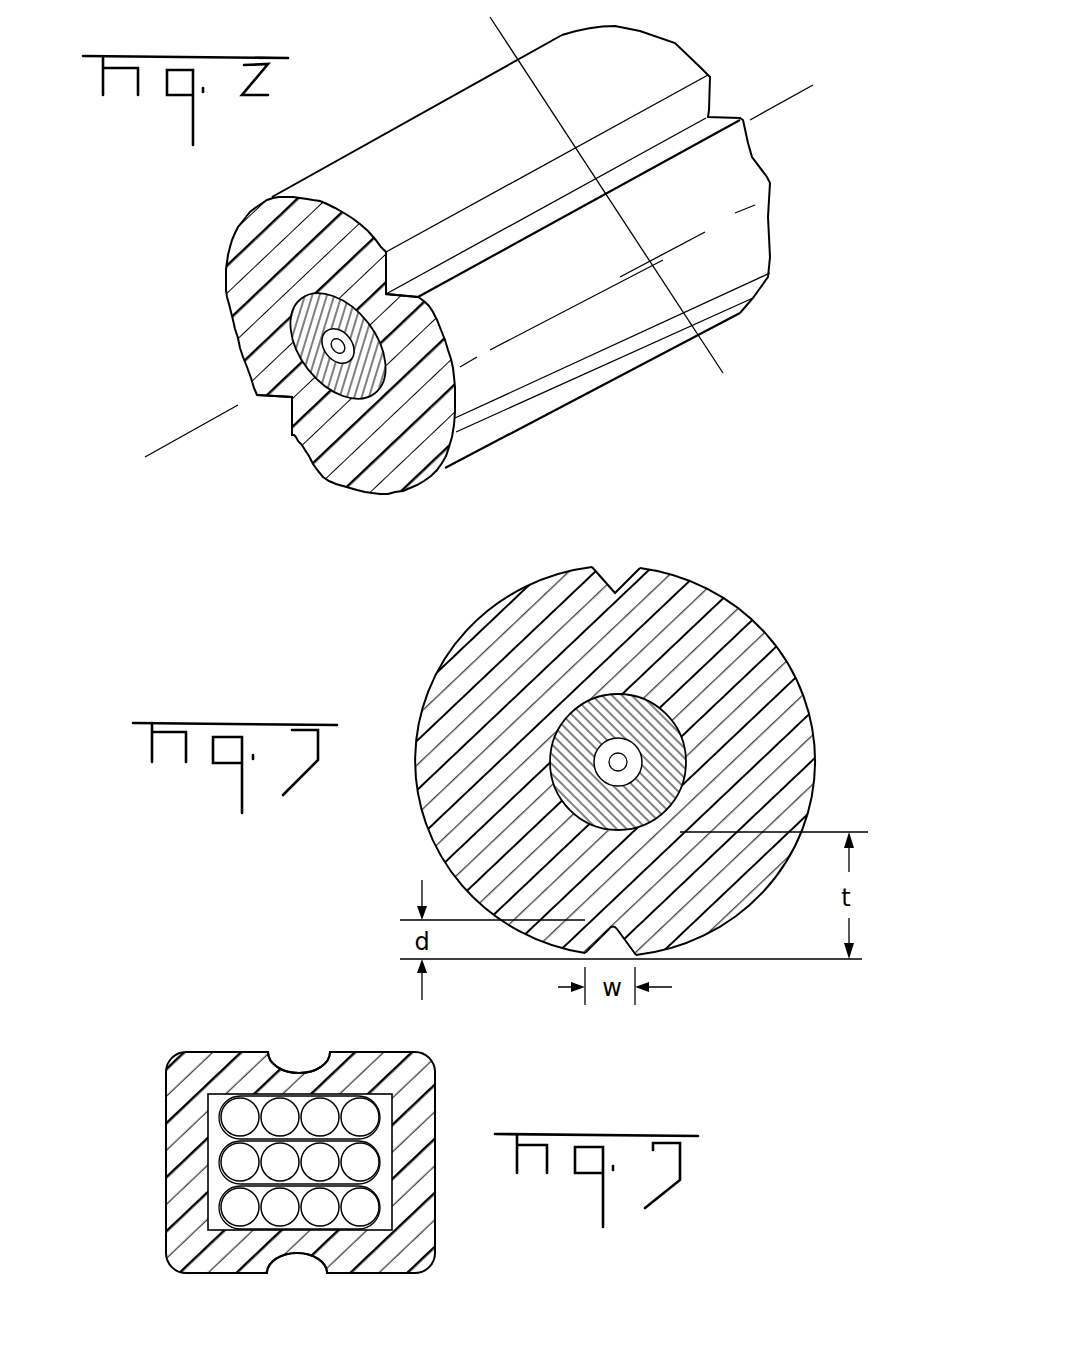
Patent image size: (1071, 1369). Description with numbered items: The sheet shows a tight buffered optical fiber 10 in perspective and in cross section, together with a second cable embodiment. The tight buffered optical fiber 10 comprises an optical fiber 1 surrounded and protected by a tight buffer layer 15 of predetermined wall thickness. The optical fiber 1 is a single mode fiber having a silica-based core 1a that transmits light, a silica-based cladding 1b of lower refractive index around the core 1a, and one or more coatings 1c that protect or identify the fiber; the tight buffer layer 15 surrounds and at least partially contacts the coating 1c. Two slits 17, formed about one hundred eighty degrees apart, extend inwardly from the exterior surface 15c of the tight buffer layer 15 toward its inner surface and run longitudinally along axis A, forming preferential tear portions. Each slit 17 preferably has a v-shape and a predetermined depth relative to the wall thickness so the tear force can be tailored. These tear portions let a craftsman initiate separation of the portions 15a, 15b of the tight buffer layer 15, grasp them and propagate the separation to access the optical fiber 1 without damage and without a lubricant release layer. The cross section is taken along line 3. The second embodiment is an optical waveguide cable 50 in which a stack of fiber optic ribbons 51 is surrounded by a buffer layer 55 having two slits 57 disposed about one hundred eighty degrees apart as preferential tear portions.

In FIG. 2, the optical fiber 1 is at (350, 397).
In FIG. 3, the optical fiber 1 is at (670, 690).
In FIG. 2, the core 1a is at (366, 365).
In FIG. 2, the cladding 1b is at (352, 346).
In FIG. 2, the coating 1c is at (368, 392).
In FIG. 2, the line 3- 3 is at (484, 20).
In FIG. 2, the axis A- A is at (479, 271).
In FIG. 2, the tight buffered optical fiber 10 is at (190, 205).
In FIG. 3, the tight buffered optical fiber 10 is at (398, 649).
In FIG. 2, the tight buffer layer 15 is at (232, 248).
In FIG. 3, the tight buffer layer 15 is at (603, 756).
In FIG. 3, the separated portion 15a is at (475, 770).
In FIG. 3, the separated portion 15b is at (744, 755).
In FIG. 2, the exterior surface 15c is at (396, 160).
In FIG. 2, the slit 17 is at (498, 250).
In FIG. 3, the slit 17 is at (600, 574).
In FIG. 5, the optical waveguide cable 50 is at (146, 1070).
In FIG. 5, the fiber optic ribbon 51 is at (393, 1160).
In FIG. 5, the buffer layer 55 is at (182, 1178).
In FIG. 5, the slit 57 is at (297, 1068).